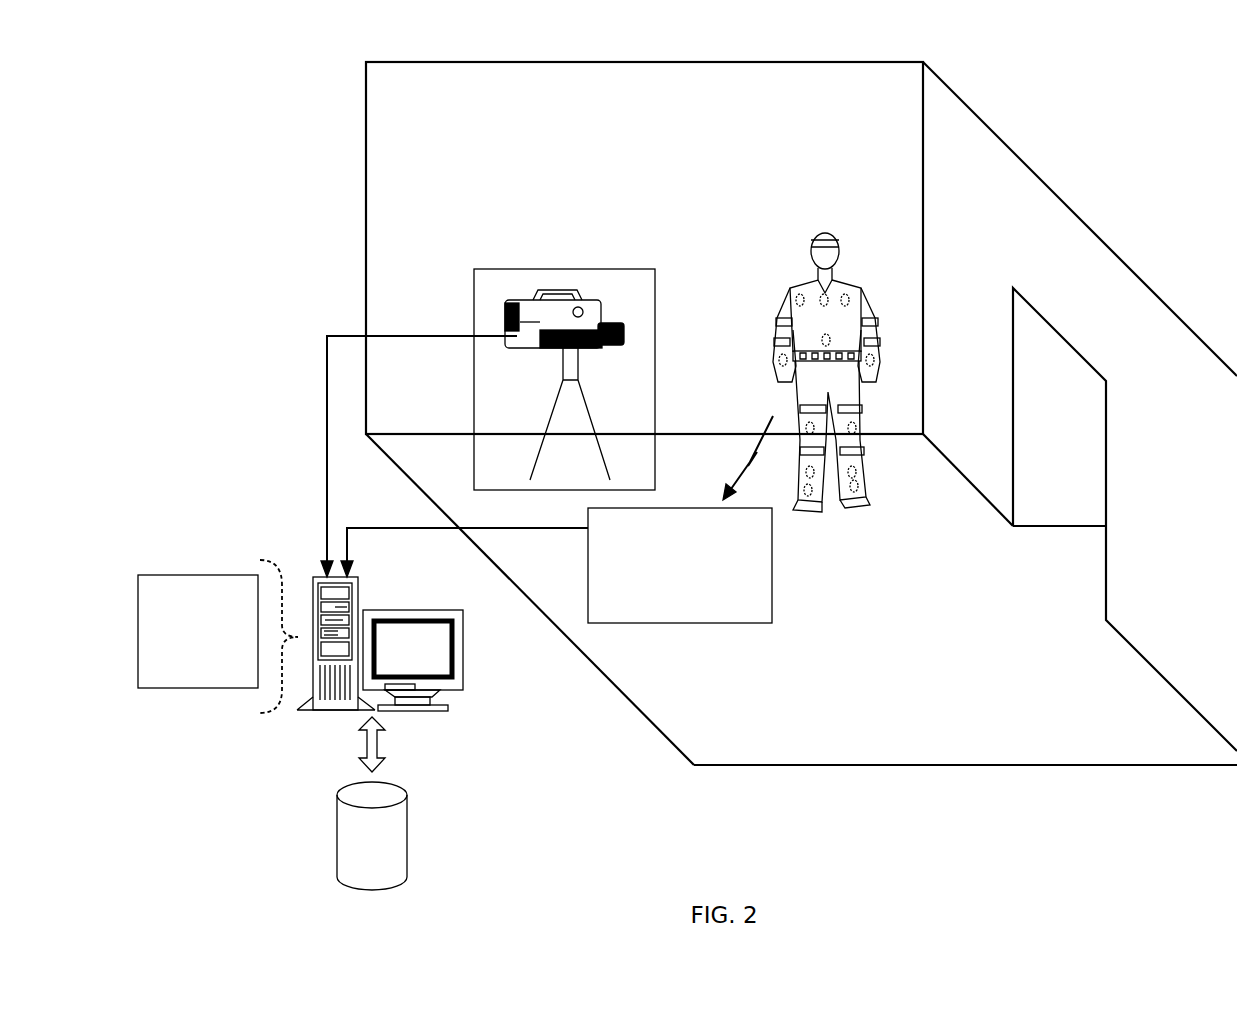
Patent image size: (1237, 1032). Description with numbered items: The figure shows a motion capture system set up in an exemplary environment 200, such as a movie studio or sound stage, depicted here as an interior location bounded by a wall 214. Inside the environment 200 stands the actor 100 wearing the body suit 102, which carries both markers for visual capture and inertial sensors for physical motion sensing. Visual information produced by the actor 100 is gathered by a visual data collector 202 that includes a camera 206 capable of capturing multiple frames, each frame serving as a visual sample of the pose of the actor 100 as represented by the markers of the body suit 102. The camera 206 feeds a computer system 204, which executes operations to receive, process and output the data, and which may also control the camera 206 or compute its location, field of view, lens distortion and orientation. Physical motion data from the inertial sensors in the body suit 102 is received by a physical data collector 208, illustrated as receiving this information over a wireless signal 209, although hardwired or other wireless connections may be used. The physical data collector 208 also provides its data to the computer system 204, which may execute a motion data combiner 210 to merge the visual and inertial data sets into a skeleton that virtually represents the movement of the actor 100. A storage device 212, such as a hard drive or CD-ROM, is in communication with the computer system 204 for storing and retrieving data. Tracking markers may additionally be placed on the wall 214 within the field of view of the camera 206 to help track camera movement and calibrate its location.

The environment 200 is at (801, 407).
The wall 214 is at (1107, 70).
The actor 100 is at (838, 342).
The body suit 102 is at (856, 277).
The visual data collector 202 is at (592, 349).
The camera 206 is at (588, 350).
The wireless signal 209 is at (733, 458).
The physical data collector 208 is at (772, 608).
The motion data combiner 210 is at (180, 575).
The computer system 204 is at (358, 607).
The storage device 212 is at (408, 843).